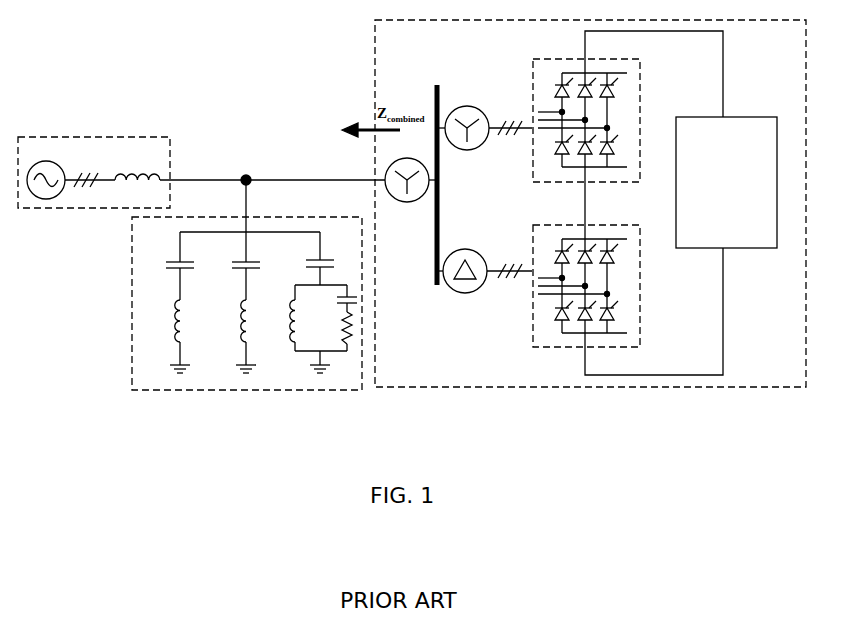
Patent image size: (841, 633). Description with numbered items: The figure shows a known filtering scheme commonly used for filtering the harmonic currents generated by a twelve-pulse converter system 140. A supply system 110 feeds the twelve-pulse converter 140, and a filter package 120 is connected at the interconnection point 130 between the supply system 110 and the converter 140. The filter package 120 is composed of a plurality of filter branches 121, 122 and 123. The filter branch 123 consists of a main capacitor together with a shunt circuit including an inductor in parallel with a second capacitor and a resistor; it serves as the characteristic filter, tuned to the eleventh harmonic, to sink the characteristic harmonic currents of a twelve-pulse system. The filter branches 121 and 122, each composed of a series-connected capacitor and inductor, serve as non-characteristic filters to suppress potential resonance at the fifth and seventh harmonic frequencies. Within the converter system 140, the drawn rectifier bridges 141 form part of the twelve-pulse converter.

The supply system 110 is at (135, 132).
The filter package 120 is at (235, 325).
The filter branch 121 is at (170, 347).
The filter branch 122 is at (235, 347).
The filter branch 123 is at (295, 347).
The interconnection point 130 is at (250, 172).
The 12-pulse converter system 140 is at (590, 223).
The thyristor rectifier bridge 141 is at (640, 68).